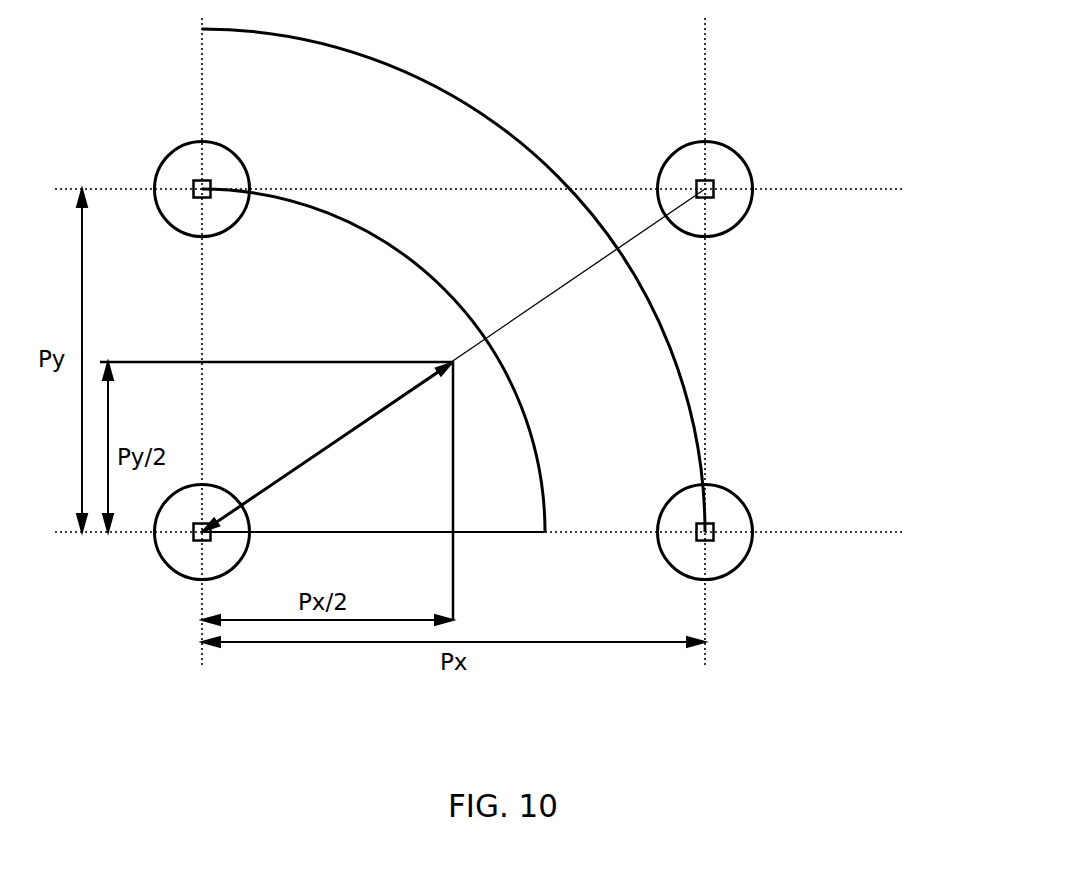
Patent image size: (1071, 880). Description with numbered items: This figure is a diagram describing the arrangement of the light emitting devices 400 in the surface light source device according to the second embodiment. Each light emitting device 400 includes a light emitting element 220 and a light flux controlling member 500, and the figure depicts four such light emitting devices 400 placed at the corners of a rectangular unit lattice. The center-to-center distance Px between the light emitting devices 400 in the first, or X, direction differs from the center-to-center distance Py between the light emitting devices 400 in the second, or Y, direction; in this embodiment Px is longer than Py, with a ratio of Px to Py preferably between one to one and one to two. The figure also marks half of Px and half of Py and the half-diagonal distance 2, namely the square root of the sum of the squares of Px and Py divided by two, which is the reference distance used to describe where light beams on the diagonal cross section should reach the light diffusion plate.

The half-diagonal pitch distance (sqrt(Px^2+Py^2)/2) 2 is at (387, 262).
The light emitting element 220 is at (742, 542).
The light flux controlling member 500 is at (714, 538).
The light emitting device 400 is at (784, 567).